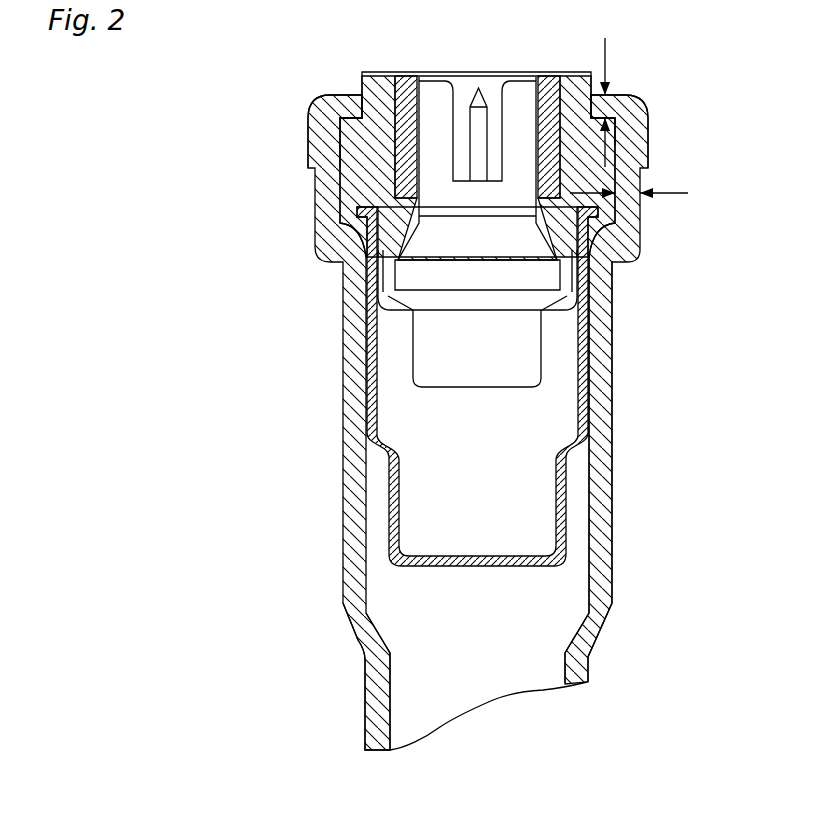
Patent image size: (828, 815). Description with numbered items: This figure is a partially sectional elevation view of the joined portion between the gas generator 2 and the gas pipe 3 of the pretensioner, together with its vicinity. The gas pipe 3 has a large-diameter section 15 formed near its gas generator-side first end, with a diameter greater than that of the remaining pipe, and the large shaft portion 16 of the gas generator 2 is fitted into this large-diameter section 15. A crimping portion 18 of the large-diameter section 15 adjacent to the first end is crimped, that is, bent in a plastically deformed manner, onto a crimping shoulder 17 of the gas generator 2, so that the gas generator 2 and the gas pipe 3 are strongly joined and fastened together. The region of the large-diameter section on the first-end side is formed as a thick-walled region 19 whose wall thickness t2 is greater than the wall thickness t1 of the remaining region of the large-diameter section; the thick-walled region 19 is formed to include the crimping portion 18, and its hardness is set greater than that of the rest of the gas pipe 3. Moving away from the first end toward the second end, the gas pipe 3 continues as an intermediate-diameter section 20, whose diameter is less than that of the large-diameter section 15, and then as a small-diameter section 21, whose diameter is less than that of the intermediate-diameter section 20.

The gas generator 2 is at (497, 56).
The gas pipe 3 is at (634, 524).
The large-diameter section 15 is at (632, 232).
The large shaft portion 16 is at (350, 187).
The crimping shoulder 17 is at (612, 122).
The crimping portion 18 is at (618, 93).
The thick-walled region 19 is at (318, 135).
The intermediate-diameter section 20 is at (356, 461).
The small-diameter section 21 is at (370, 698).
The wall thickness of remaining region t1 is at (641, 206).
The wall thickness of thick-walled region t2 is at (618, 100).